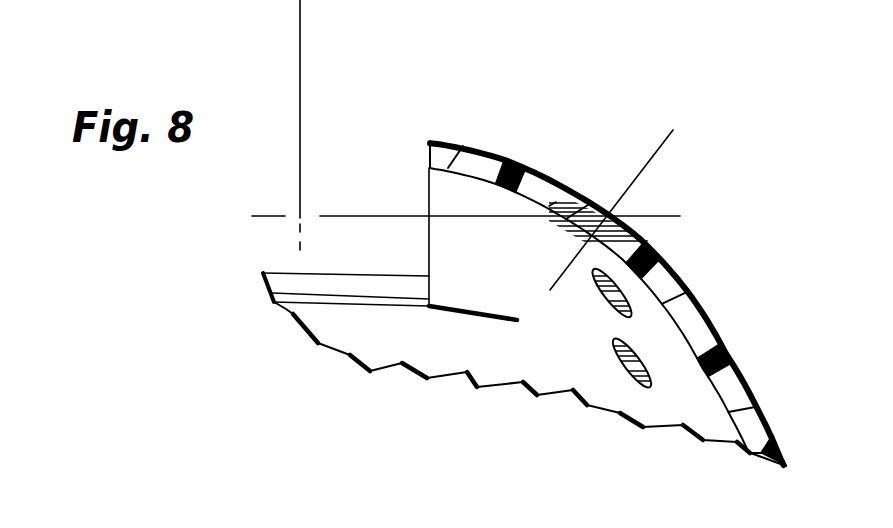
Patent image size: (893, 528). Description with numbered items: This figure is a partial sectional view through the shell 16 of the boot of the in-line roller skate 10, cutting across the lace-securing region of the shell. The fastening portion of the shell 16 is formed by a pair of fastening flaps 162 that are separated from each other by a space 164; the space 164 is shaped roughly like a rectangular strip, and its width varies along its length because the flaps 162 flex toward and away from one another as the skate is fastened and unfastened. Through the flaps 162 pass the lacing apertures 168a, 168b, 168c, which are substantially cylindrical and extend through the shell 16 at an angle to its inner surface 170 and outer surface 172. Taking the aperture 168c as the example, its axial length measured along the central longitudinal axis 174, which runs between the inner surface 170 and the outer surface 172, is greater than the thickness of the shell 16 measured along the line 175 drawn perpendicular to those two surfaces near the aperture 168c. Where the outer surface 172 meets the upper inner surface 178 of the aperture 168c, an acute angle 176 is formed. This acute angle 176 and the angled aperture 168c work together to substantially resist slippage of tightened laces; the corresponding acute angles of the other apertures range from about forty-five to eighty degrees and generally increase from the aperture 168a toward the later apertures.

The in-line roller skate 10 is at (549, 353).
The shell 16 is at (633, 279).
The fastening flaps 162 is at (456, 243).
The space 164 is at (313, 188).
The lacing aperture 168a is at (617, 381).
The lacing aperture 168b is at (590, 314).
The lacing aperture 168c is at (612, 229).
The inner surface 170 is at (485, 178).
The outer surface 172 is at (490, 149).
The central longitudinal axis 174 is at (708, 217).
The line 175 is at (667, 143).
The acute angle 176 is at (604, 188).
The upper inner surface 178 is at (577, 220).